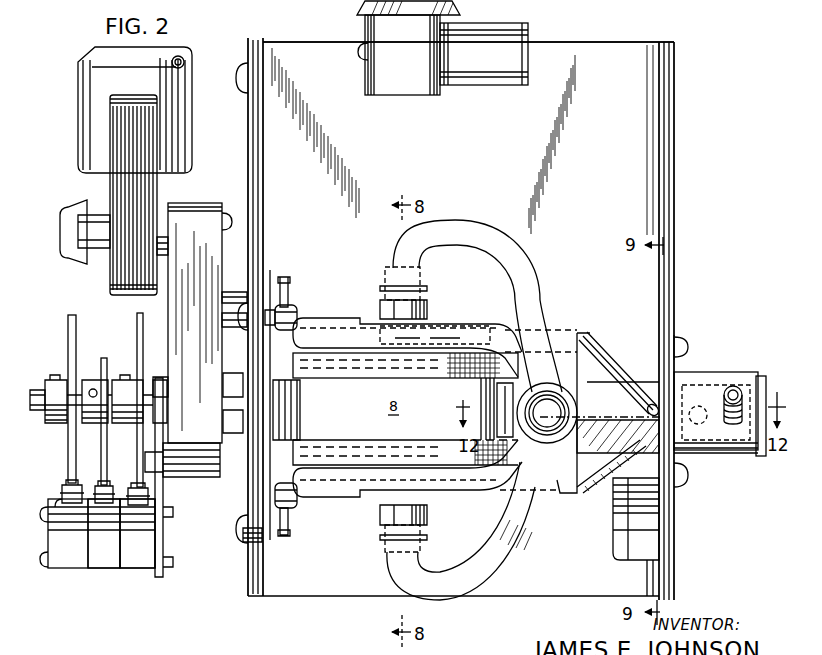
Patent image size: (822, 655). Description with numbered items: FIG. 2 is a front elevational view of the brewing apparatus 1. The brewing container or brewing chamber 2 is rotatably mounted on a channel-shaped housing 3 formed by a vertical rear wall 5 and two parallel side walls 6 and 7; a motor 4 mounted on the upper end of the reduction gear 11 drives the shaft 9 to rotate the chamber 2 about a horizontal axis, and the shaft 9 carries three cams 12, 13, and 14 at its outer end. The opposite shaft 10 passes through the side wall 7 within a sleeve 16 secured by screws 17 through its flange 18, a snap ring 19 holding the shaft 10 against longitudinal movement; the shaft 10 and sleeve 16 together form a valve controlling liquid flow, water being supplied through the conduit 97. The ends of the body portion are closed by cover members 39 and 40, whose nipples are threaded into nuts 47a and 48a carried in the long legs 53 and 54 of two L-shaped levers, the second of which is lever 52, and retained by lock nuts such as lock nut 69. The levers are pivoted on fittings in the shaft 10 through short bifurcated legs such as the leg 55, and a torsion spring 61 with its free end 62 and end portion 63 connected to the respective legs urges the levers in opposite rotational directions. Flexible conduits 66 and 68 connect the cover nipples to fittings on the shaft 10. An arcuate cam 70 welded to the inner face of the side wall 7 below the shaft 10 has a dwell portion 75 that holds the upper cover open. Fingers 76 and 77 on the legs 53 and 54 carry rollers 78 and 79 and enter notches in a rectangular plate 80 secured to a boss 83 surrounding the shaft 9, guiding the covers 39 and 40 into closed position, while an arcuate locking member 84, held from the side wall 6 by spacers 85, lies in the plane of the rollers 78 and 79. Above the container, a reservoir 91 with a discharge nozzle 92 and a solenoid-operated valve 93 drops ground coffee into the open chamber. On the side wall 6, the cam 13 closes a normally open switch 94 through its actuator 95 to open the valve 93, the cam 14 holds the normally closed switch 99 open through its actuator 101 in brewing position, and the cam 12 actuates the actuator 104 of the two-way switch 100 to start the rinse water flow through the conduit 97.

The brewing apparatus 1 is at (693, 170).
The brewing container 2 is at (490, 344).
The supporting housing 3 is at (677, 212).
The motor 4 is at (74, 93).
The rear wall 5 is at (630, 47).
The side wall 6 is at (263, 40).
The side wall 7 is at (674, 128).
The drive shaft 9 is at (36, 396).
The shaft 10 is at (648, 378).
The reduction gear 11 is at (205, 202).
The cam 12 is at (67, 326).
The cam 13 is at (104, 358).
The cam 14 is at (146, 342).
The sleeve member 16 is at (722, 372).
The screws 17 is at (689, 344).
The flange 18 is at (681, 340).
The snap ring 19 is at (752, 456).
The cover member 39 is at (361, 352).
The cover member 40 is at (348, 470).
The nut 47a is at (434, 320).
The nut 48a is at (430, 440).
The L-shaped lever 52 is at (455, 493).
The long leg 53 is at (337, 330).
The long leg 54 is at (318, 496).
The bifurcated leg 55 is at (580, 372).
The torsion spring 61 is at (538, 447).
The free end 62 is at (568, 332).
The end portion 63 is at (548, 477).
The conduit 66 is at (458, 226).
The conduit 68 is at (498, 566).
The lock nut 69 is at (428, 518).
The arcuate cam 70 is at (622, 560).
The dwell portion 75 is at (487, 325).
The finger 76 is at (308, 317).
The finger 77 is at (304, 508).
The roller 78 is at (290, 304).
The roller 79 is at (296, 508).
The plate 80 is at (266, 310).
The boss 83 is at (290, 395).
The locking member 84 is at (282, 276).
The spacers 85 is at (250, 543).
The reservoir 91 is at (358, 10).
The discharge nozzle 92 is at (371, 46).
The solenoid-operated valve 93 is at (530, 32).
The normally open switch 94 is at (104, 560).
The actuator 95 is at (103, 483).
The conduit 97 is at (736, 390).
The normally closed switch 99 is at (142, 560).
The two-way switch 100 is at (67, 560).
The actuator 101 is at (149, 498).
The actuator 104 is at (63, 488).